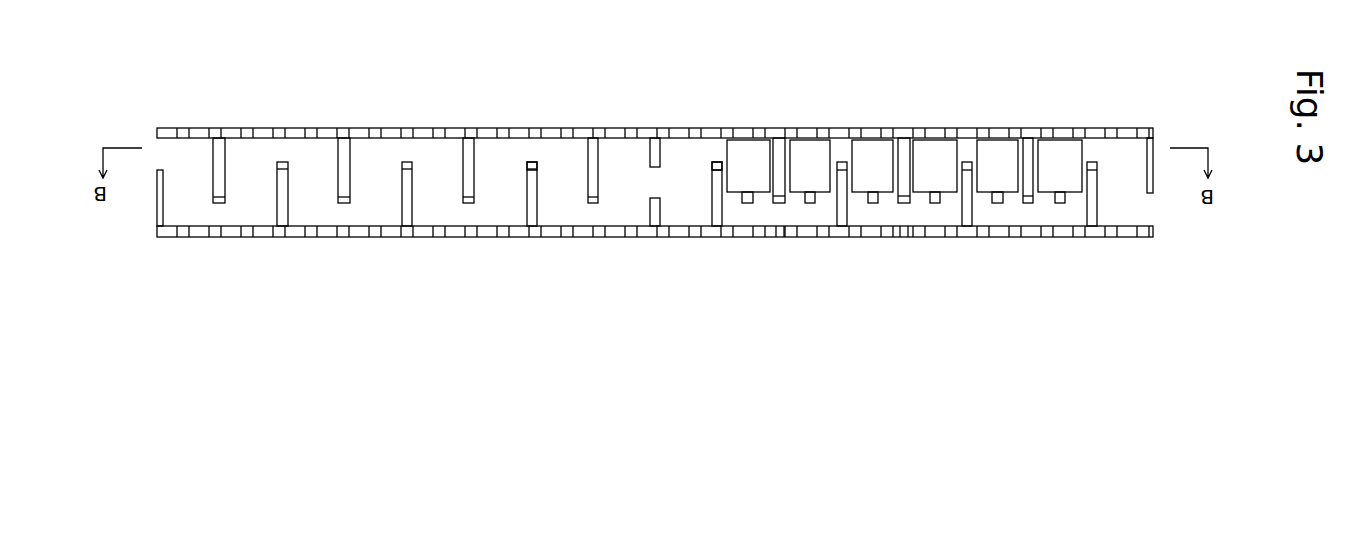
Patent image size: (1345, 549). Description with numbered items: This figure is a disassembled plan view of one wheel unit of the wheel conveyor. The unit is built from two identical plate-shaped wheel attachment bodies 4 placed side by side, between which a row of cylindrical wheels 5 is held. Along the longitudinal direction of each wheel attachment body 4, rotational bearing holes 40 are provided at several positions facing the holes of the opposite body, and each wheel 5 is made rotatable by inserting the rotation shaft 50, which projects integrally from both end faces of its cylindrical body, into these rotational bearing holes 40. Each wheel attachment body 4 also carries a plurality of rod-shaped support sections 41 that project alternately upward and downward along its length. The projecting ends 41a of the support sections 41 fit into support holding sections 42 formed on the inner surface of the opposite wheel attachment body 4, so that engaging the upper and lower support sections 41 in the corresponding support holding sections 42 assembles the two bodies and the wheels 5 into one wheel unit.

The wheel attachment body 4 is at (592, 130).
The rotational bearing hole 40 is at (497, 237).
The support section 41 is at (470, 139).
The projecting end 41a is at (531, 139).
The support holding section 42 is at (780, 237).
The wheel 5 is at (948, 128).
The rotation shaft 50 is at (1057, 140).